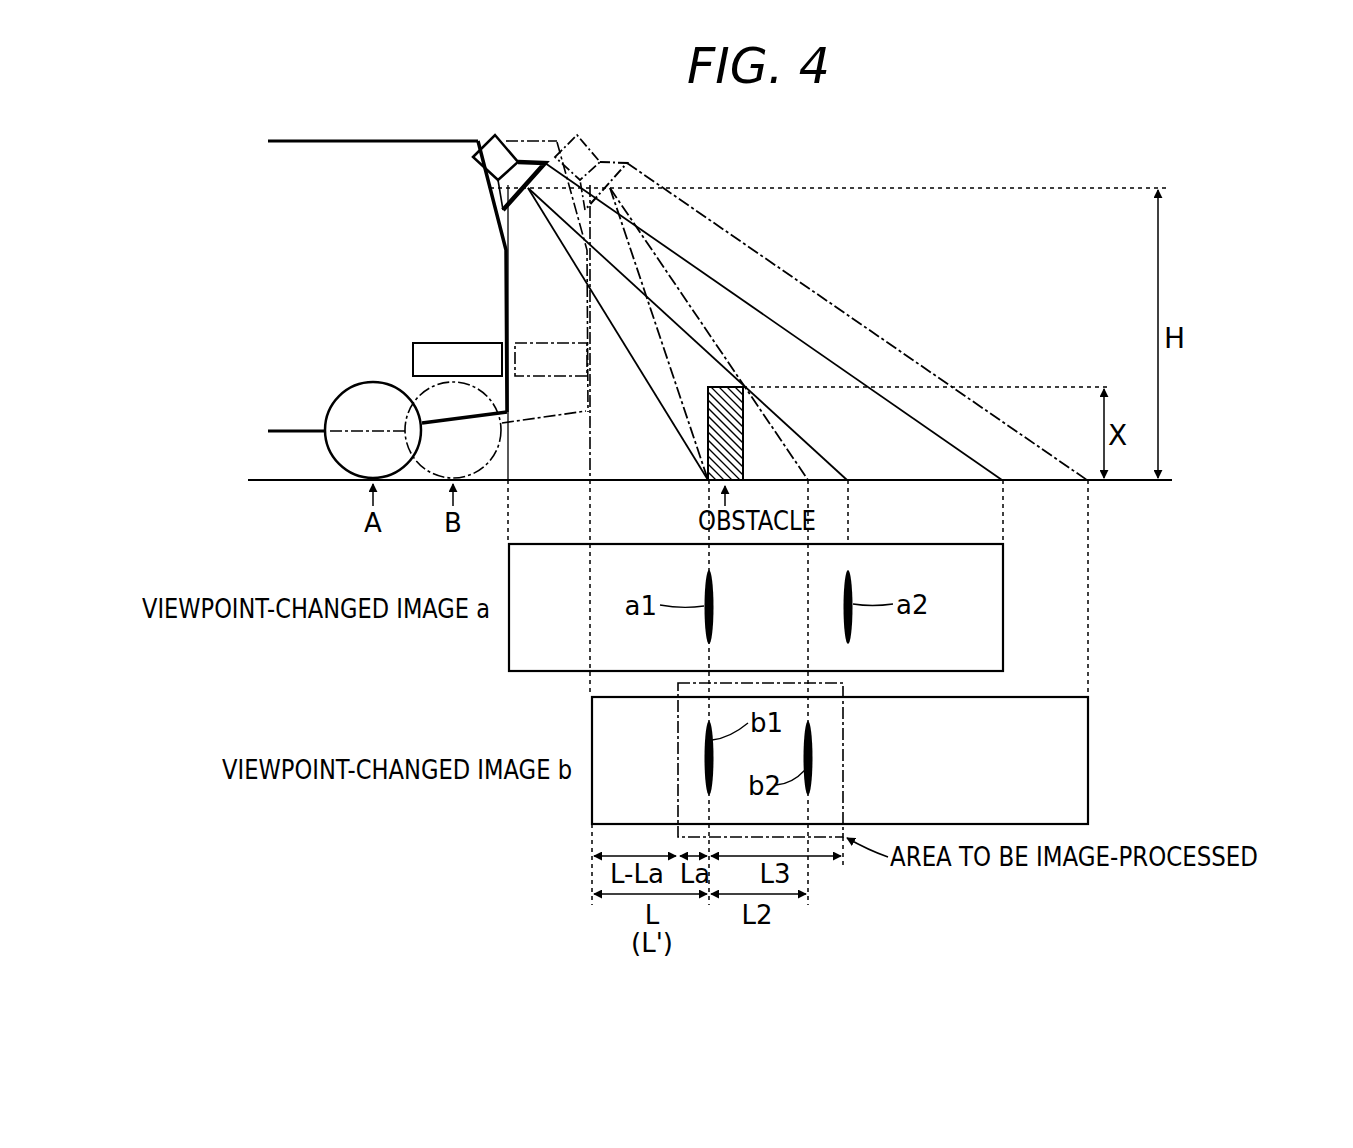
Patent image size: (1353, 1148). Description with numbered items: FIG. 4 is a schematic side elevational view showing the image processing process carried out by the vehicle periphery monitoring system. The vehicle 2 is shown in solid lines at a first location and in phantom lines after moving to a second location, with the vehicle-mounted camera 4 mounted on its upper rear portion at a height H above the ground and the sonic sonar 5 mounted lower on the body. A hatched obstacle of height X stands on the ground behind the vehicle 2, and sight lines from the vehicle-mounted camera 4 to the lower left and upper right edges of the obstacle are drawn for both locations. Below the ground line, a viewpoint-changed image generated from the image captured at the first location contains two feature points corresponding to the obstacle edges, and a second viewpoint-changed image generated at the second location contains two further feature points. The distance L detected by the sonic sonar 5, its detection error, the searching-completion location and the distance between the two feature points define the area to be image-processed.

The vehicle 2 is at (450, 140).
The vehicle-mounted camera 4 is at (507, 140).
The sonic sonar 5 is at (423, 343).